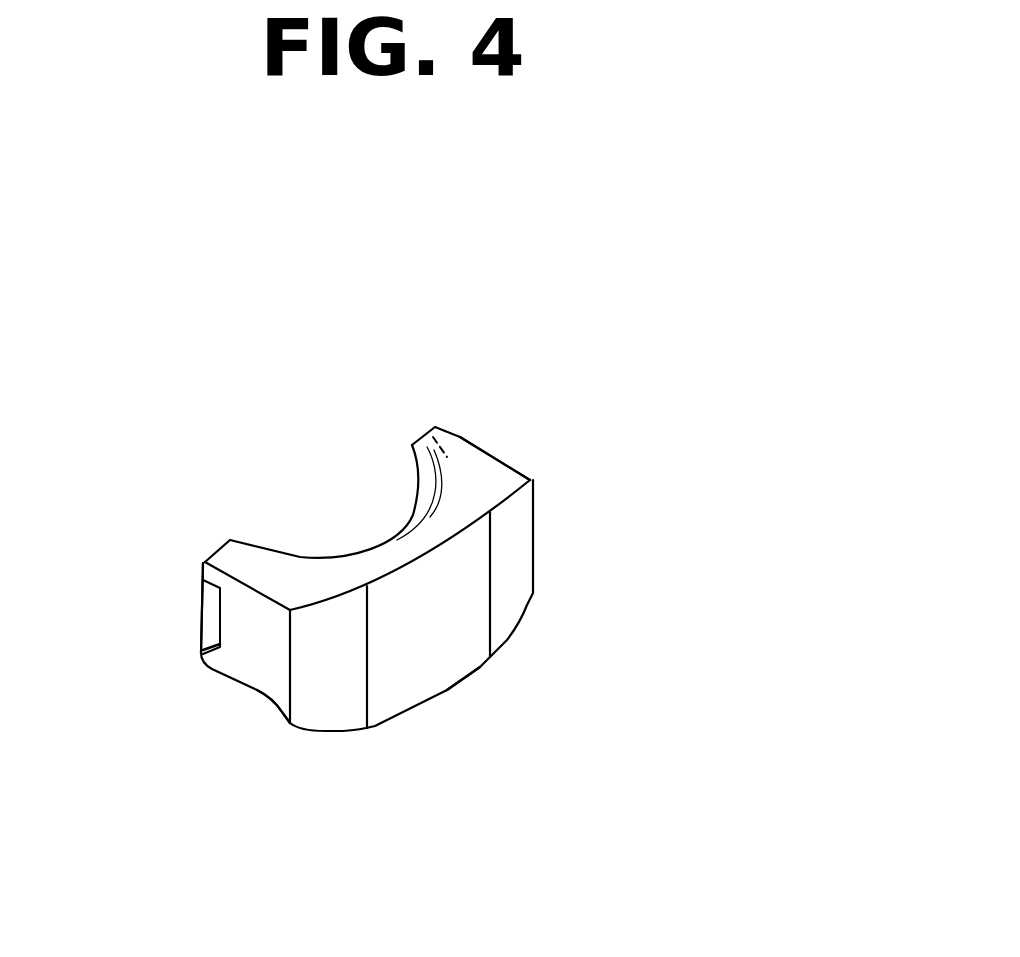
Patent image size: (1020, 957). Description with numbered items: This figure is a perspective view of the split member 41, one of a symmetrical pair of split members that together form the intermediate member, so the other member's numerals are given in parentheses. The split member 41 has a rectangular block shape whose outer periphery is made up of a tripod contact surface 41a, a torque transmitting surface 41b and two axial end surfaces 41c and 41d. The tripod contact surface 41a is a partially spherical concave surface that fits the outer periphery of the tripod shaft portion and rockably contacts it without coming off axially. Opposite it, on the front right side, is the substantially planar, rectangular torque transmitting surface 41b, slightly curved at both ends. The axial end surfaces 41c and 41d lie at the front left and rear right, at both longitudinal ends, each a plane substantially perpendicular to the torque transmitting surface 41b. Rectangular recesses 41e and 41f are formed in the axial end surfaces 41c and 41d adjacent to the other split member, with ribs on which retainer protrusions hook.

The split member 41 is at (593, 497).
The tripod contact surface 41a is at (387, 537).
The torque transmitting surface 41b is at (457, 665).
The axial end surface 41c is at (240, 640).
The axial end surface 41d is at (547, 433).
The recess 41e is at (212, 618).
The recess 41f is at (425, 430).